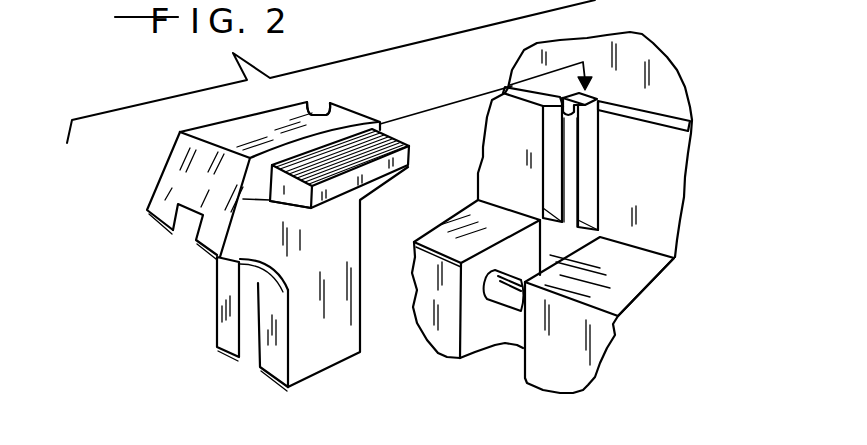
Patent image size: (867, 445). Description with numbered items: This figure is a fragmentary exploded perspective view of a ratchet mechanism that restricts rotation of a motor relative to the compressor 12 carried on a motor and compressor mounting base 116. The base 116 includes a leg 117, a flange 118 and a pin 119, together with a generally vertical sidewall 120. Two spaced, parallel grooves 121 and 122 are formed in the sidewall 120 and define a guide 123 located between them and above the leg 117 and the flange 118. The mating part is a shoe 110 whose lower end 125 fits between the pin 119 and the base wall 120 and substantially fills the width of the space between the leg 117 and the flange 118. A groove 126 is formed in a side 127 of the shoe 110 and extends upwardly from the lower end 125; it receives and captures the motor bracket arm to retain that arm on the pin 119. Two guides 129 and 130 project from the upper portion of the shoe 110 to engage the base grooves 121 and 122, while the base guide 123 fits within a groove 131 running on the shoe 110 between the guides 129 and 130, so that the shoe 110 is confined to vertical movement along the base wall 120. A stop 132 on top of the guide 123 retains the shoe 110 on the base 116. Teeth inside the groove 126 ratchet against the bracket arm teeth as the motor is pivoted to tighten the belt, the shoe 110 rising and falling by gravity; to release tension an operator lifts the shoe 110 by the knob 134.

The compressor 12 is at (634, 58).
The shoe 110 is at (150, 176).
The motor and compressor mounting base 116 is at (656, 281).
The leg 117 is at (553, 377).
The flange 118 is at (443, 360).
The pin 119 is at (500, 293).
The sidewall 120 is at (664, 216).
The groove 121 is at (552, 152).
The groove 122 is at (600, 178).
The guide 123 is at (600, 128).
The lower end 125 is at (317, 340).
The groove 126 is at (250, 293).
The side 127 is at (273, 353).
The guide 129 is at (322, 110).
The guide 130 is at (392, 126).
The groove 131 is at (338, 116).
The stop 132 is at (546, 108).
The knob 134 is at (328, 198).